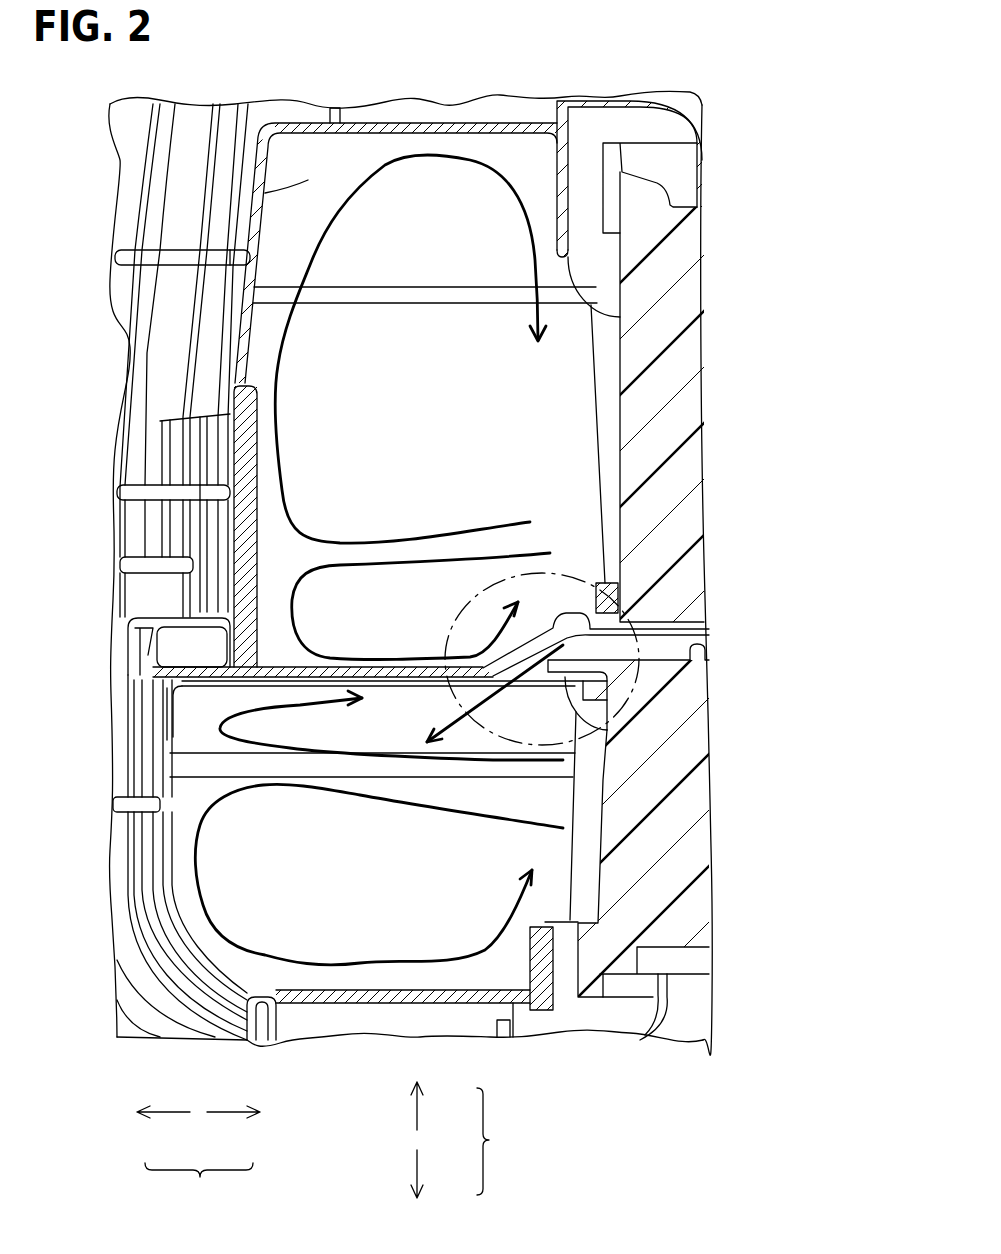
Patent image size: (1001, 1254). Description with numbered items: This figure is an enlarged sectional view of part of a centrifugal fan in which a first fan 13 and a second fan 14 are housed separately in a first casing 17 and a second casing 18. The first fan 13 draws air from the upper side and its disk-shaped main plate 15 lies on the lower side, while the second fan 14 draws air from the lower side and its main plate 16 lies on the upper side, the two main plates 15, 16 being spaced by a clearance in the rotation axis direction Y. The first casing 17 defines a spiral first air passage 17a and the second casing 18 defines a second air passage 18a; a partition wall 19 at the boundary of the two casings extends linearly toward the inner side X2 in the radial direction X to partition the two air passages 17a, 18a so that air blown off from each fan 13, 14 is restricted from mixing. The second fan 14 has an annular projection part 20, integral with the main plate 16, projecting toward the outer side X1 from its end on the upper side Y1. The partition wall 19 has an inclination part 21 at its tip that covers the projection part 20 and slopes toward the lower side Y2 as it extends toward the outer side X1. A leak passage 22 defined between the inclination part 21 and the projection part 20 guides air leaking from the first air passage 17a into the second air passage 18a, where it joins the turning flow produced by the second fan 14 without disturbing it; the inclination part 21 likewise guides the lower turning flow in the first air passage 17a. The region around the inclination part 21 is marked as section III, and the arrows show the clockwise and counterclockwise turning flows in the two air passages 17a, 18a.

The first fan 13 is at (655, 400).
The second fan 14 is at (670, 807).
The main plate 15 is at (665, 633).
The main plate 16 is at (706, 648).
The first scroll casing 17 is at (306, 182).
The first air passage 17a is at (437, 200).
The second scroll casing 18 is at (170, 840).
The second air passage 18a is at (343, 933).
The partition wall 19 is at (165, 736).
The projection part 20 is at (620, 722).
The inclination part 21 is at (620, 600).
The leak passage 22 is at (600, 752).
The section III is at (683, 501).
The radial direction X is at (199, 1184).
The outer side X1 is at (170, 1113).
The inner side X2 is at (228, 1113).
The rotation axis direction Y is at (491, 1141).
The upper side Y1 is at (419, 1112).
The lower side Y2 is at (419, 1160).